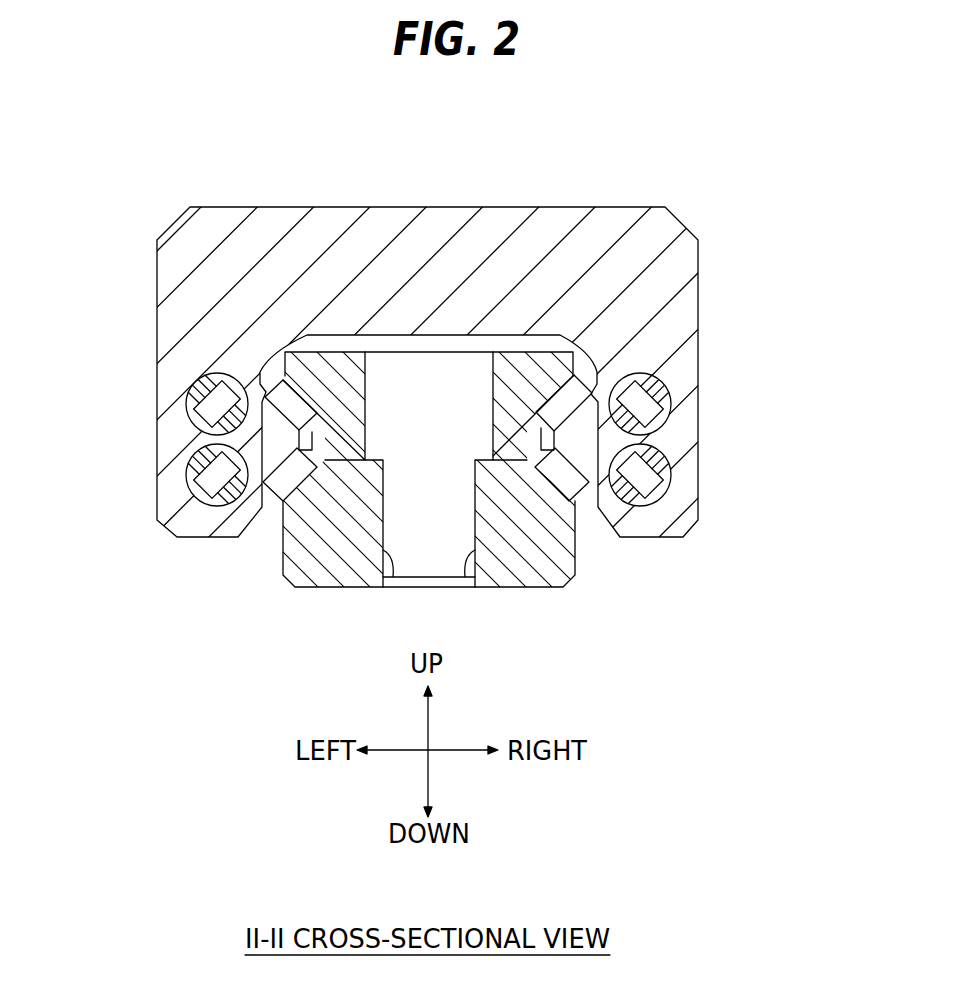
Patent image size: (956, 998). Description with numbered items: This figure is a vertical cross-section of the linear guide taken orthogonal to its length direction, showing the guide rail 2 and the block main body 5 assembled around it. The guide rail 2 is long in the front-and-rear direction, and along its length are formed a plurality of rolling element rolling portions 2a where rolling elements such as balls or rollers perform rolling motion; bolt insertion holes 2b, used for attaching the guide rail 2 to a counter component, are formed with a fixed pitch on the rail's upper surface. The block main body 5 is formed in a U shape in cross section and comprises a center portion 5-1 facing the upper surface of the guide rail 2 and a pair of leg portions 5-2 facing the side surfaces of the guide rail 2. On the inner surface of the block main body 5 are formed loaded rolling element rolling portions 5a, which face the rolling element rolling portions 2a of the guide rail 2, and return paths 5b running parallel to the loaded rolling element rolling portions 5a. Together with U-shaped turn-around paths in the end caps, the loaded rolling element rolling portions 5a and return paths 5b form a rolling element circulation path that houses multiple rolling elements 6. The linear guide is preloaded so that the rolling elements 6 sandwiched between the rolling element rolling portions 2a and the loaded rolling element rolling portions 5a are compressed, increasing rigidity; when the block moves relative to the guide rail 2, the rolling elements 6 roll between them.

The guide rail 2 is at (493, 583).
The rolling element rolling portion 2a is at (544, 484).
The bolt insertion hole 2b is at (395, 578).
The block main body 5 is at (430, 227).
The center portion 5-1 is at (512, 259).
The leg portion 5-2 is at (178, 442).
The loaded rolling element rolling portion 5a is at (590, 471).
The return path 5b is at (660, 415).
The rolling element 6 is at (287, 485).